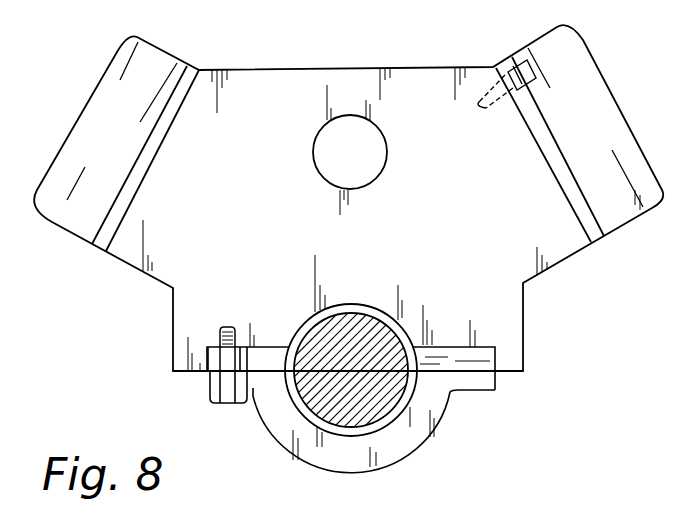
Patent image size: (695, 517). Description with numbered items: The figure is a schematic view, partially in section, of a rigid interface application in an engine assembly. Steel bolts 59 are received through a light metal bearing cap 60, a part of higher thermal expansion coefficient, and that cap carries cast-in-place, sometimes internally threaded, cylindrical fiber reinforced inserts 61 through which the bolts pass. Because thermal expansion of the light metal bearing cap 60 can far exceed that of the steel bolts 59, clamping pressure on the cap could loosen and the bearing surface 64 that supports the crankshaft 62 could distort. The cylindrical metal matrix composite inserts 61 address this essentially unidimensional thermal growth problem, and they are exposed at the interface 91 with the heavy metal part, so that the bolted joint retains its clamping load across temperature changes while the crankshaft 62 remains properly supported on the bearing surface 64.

The steel bolt 59 is at (206, 383).
The light metal bearing cap 60 is at (407, 438).
The cylindrical fiber reinforced insert 61 is at (537, 98).
The crankshaft 62 is at (372, 343).
The bearing surface 64 is at (338, 432).
The interface 91 is at (240, 328).